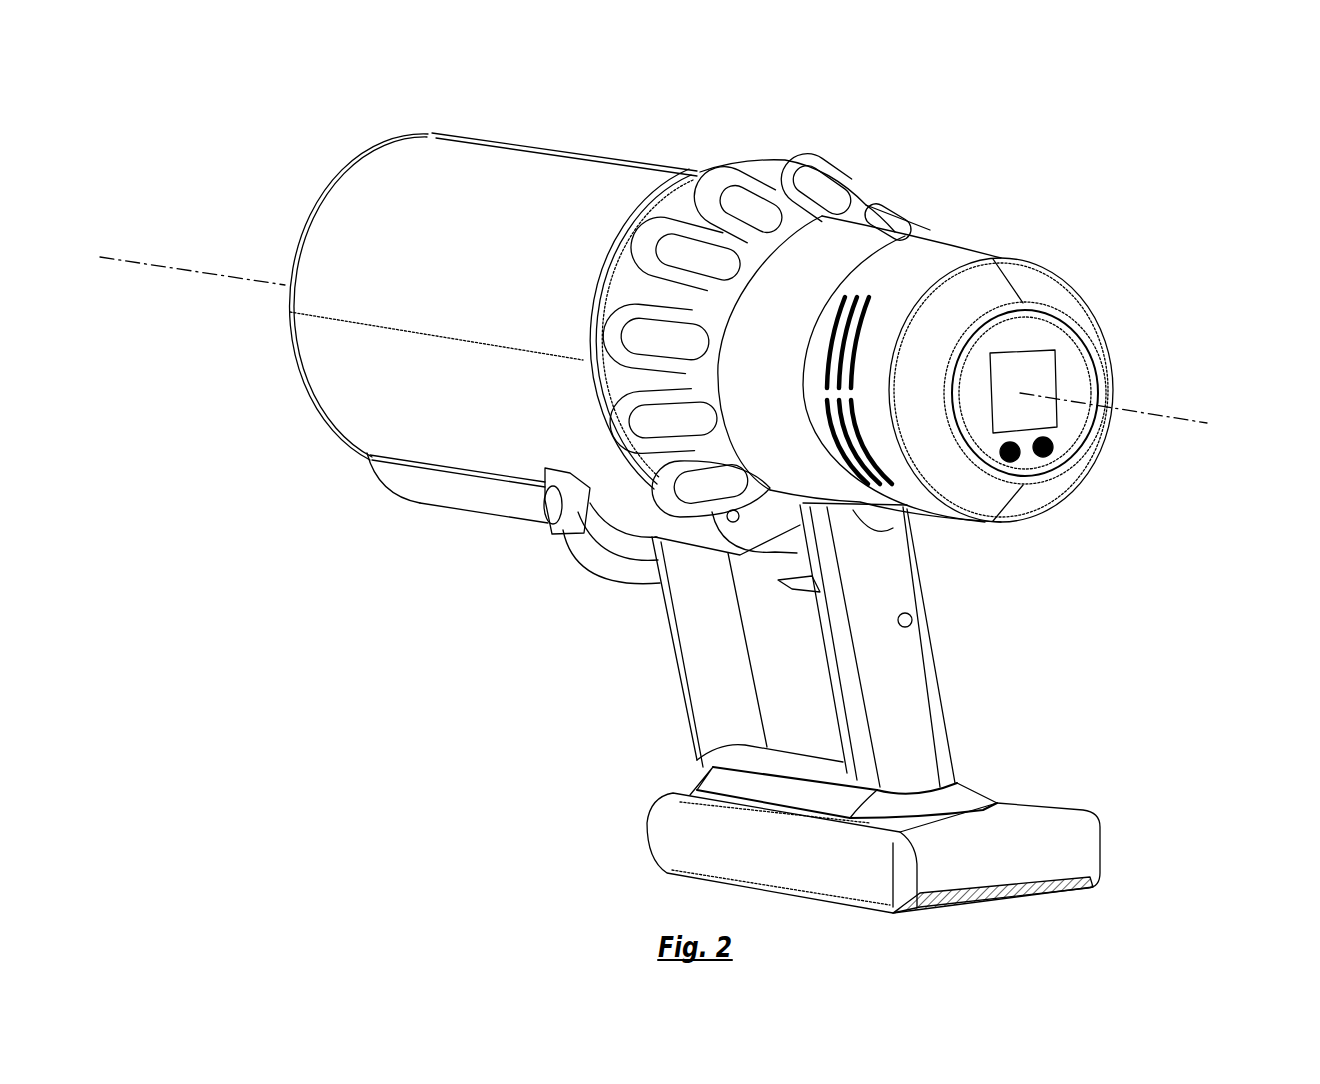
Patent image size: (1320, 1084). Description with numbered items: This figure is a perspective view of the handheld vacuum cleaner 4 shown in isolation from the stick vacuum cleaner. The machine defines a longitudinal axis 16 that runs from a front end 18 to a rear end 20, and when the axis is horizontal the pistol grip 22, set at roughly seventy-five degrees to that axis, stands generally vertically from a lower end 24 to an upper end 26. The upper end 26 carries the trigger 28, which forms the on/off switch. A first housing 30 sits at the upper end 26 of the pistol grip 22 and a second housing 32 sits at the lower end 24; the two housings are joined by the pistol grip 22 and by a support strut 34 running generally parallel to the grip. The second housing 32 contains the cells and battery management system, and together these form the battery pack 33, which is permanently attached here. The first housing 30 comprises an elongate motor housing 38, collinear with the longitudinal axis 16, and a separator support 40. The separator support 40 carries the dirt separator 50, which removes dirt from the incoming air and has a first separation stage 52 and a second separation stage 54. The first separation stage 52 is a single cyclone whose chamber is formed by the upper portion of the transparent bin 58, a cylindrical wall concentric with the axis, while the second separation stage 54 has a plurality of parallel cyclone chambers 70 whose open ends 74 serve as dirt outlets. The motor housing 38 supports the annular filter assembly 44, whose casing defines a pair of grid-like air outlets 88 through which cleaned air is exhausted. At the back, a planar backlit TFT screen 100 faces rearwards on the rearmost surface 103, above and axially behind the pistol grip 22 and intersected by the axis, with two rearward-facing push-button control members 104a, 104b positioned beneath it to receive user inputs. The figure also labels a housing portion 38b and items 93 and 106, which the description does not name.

The handheld vacuum cleaner 4 is at (1232, 152).
The longitudinal axis 16 is at (168, 265).
The front end 18 is at (177, 493).
The rear end 20 is at (1208, 573).
The pistol grip 22 is at (907, 680).
The lower end 24 is at (992, 721).
The upper end 26 is at (958, 580).
The trigger 28 is at (800, 537).
The first housing 30 is at (447, 571).
The second housing 32 is at (545, 825).
The battery pack 33 is at (1108, 813).
The support strut 34 is at (718, 705).
The motor housing 38 is at (930, 222).
The front housing portion 38b is at (810, 255).
The separator support 40 is at (448, 490).
The filter assembly 44 is at (1040, 245).
The dirt separator 50 is at (735, 117).
The first separation stage 52 is at (597, 132).
The second separation stage 54 is at (845, 165).
The transparent bin 58 is at (340, 346).
The cyclone chambers 70 is at (635, 237).
The open ends 74 is at (750, 200).
The air outlets 88 is at (888, 295).
The airflow direction 93 is at (273, 105).
The screen 100 is at (1045, 378).
The rearmost surface 103 is at (1040, 323).
The control member 104a is at (1018, 457).
The control member 104b is at (1050, 441).
The latch 106 is at (598, 563).